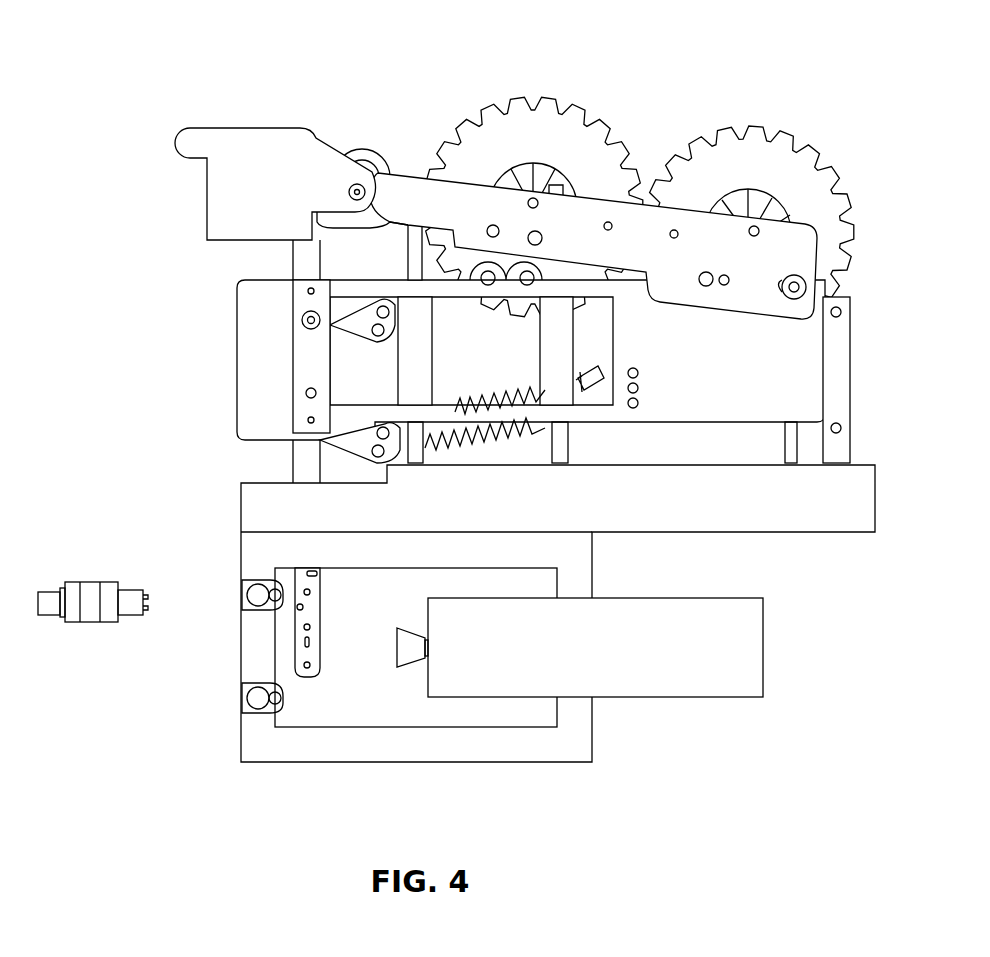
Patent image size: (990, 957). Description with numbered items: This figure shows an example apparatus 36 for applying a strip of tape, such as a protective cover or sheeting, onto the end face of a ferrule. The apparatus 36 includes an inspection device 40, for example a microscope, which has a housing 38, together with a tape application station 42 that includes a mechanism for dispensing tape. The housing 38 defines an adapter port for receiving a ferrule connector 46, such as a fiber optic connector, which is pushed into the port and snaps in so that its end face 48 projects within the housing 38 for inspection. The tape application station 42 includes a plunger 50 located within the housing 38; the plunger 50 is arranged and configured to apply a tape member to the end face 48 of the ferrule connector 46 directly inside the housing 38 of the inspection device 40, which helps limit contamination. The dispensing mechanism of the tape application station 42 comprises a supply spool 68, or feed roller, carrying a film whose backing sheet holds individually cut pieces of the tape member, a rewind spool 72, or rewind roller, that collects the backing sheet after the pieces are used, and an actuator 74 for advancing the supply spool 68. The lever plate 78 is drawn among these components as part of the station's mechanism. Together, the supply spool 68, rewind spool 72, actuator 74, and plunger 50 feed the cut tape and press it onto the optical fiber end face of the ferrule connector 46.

The apparatus 36 is at (855, 92).
The housing 38 is at (468, 770).
The inspection device 40 is at (660, 698).
The tape application station 42 is at (407, 140).
The ferrule connector 46 is at (90, 620).
The end face 48 is at (150, 602).
The plunger 50 is at (307, 678).
The supply spool 68 is at (515, 97).
The rewind spool 72 is at (770, 130).
The actuator 74 is at (240, 120).
The lever plate 78 is at (802, 258).